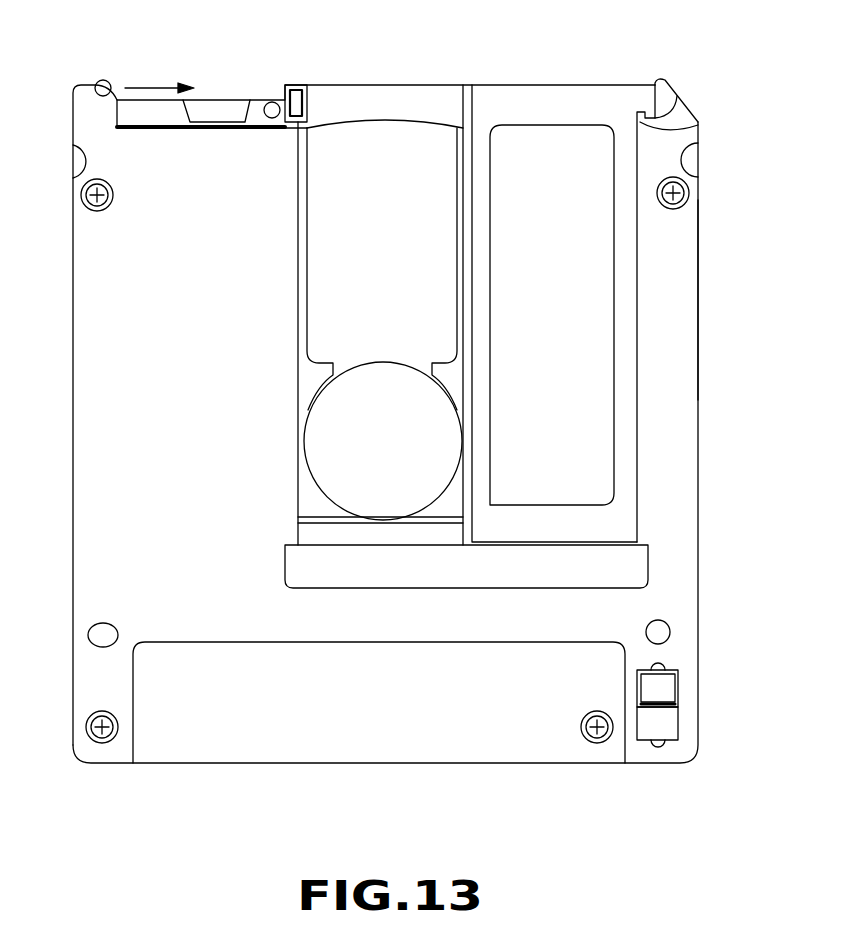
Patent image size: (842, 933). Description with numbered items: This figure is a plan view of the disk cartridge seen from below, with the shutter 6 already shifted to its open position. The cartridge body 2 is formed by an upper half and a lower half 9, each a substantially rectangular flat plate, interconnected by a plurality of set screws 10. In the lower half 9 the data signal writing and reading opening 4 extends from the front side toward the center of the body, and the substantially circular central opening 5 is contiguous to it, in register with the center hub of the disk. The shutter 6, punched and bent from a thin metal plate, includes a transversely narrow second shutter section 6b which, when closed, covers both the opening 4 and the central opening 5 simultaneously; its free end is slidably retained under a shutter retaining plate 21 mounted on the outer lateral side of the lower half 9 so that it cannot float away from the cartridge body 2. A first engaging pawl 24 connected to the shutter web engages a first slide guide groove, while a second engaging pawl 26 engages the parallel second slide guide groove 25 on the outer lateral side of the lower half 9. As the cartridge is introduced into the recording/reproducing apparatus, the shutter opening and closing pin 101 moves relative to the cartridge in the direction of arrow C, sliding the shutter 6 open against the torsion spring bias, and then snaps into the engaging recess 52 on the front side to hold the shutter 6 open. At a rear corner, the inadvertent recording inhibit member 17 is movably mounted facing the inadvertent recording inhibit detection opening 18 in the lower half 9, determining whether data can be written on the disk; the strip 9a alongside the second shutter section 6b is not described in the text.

The cartridge body 2 is at (688, 545).
The data signal writing and reading opening 4 is at (310, 226).
The central opening 5 is at (312, 440).
The shutter 6 is at (581, 96).
The second shutter section 6b is at (637, 380).
The lower half 9 is at (690, 437).
The strip 9a is at (637, 282).
The set screw 10 is at (78, 205).
The inadvertent recording inhibit member 17 is at (672, 685).
The inadvertent recording inhibit detection opening 18 is at (672, 720).
The shutter retaining plate 21 is at (513, 590).
The first engaging pawl 24 is at (683, 93).
The second slide guide groove 25 is at (150, 129).
The second engaging pawl 26 is at (281, 129).
The engaging recess 52 is at (266, 103).
The shutter opening and closing pin 101 is at (105, 80).
The arrow C is at (159, 75).